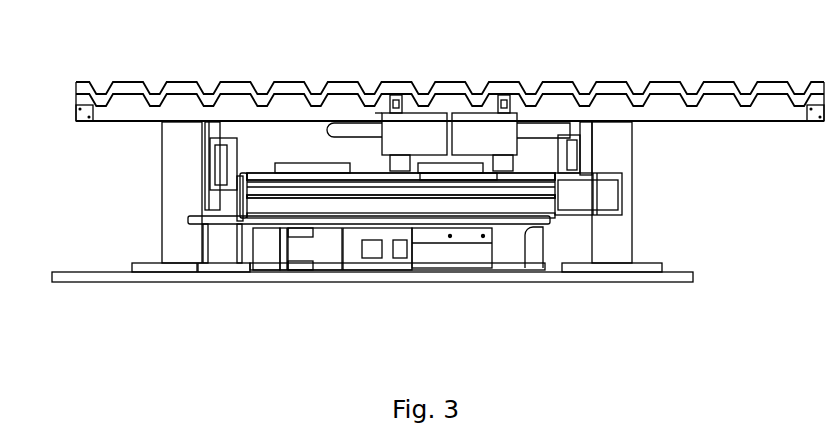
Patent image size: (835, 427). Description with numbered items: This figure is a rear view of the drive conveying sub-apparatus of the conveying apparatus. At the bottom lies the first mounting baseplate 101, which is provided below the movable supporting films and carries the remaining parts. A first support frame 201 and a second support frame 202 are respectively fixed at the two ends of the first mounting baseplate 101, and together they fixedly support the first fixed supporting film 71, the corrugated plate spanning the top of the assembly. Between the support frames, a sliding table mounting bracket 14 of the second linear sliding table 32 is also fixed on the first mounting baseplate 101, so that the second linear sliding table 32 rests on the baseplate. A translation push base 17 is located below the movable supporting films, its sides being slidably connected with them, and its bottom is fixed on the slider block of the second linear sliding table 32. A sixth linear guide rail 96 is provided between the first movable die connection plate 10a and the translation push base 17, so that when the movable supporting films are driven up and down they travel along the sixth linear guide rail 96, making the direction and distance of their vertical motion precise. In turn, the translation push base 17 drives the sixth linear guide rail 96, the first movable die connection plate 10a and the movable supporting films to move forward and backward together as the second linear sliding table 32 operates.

The first fixed supporting film 71 is at (128, 90).
The first movable die connection plate 10a is at (345, 130).
The sixth linear guide rail 96 is at (395, 110).
The translation push base 17 is at (440, 133).
The second linear sliding table 32 is at (467, 203).
The sliding table mounting bracket 14 is at (236, 221).
The first support frame 201 is at (186, 243).
The second support frame 202 is at (613, 245).
The first mounting baseplate 101 is at (106, 278).